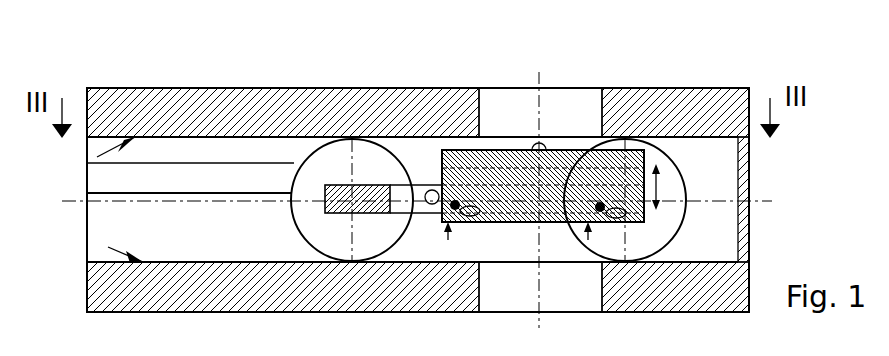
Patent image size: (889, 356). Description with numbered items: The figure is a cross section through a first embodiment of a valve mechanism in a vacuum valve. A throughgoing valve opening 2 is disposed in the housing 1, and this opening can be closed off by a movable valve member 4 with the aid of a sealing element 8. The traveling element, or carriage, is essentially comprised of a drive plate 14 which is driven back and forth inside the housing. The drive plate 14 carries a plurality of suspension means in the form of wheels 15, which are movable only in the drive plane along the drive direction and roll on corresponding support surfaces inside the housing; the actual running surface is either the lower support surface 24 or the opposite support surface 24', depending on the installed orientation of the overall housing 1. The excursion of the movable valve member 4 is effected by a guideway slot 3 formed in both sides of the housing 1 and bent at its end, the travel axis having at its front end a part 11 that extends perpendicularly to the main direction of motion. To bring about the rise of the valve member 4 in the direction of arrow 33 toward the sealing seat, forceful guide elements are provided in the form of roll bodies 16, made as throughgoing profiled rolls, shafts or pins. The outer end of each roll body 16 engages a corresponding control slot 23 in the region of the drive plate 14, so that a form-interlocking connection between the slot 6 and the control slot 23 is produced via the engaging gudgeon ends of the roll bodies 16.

The housing 1 is at (180, 110).
The valve opening 2 is at (575, 108).
The guideway slot 3 is at (231, 173).
The movable valve member 4 is at (637, 172).
The slot 6 is at (623, 223).
The sealing element 8 is at (470, 152).
The part of axis 11 is at (536, 147).
The drive plate 14 is at (373, 195).
The wheels 15 is at (328, 148).
The roll bodies 16 is at (447, 240).
The control slot 23 is at (425, 205).
The lower support surface 24 is at (113, 301).
The opposite support surface 24' is at (103, 80).
The arrow 33 is at (668, 180).